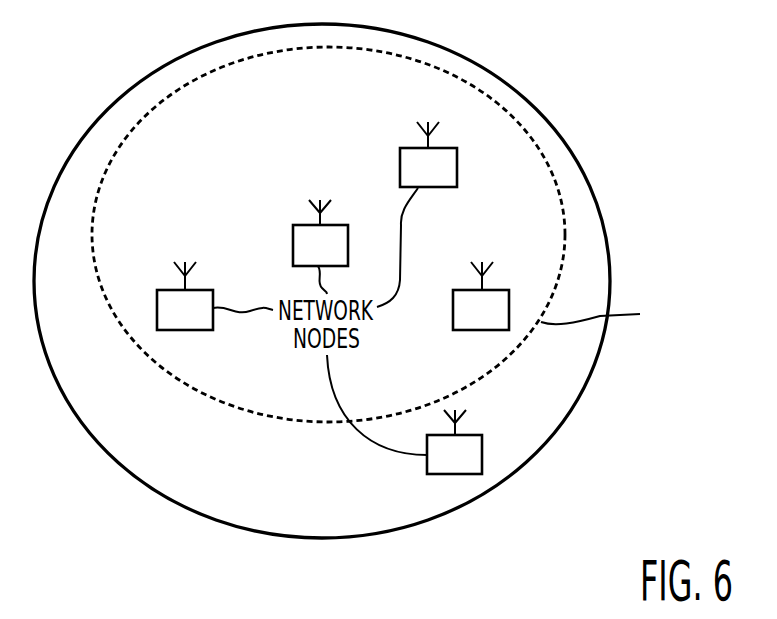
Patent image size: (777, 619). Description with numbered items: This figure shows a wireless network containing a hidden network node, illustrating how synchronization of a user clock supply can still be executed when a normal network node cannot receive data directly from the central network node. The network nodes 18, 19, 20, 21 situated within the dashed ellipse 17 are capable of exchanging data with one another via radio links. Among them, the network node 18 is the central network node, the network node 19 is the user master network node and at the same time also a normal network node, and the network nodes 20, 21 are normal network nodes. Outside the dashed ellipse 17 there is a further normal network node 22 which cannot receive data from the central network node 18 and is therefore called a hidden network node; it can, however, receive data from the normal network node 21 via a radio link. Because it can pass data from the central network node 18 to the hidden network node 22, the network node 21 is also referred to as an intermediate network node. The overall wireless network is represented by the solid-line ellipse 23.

The dashed ellipse 17 is at (523, 345).
The central network node 18 is at (332, 237).
The user master network node 19 is at (167, 302).
The normal network node 20 is at (442, 160).
The intermediate network node 21 is at (472, 320).
The hidden network node 22 is at (445, 465).
The ellipse representing the overall wireless network 23 is at (497, 490).